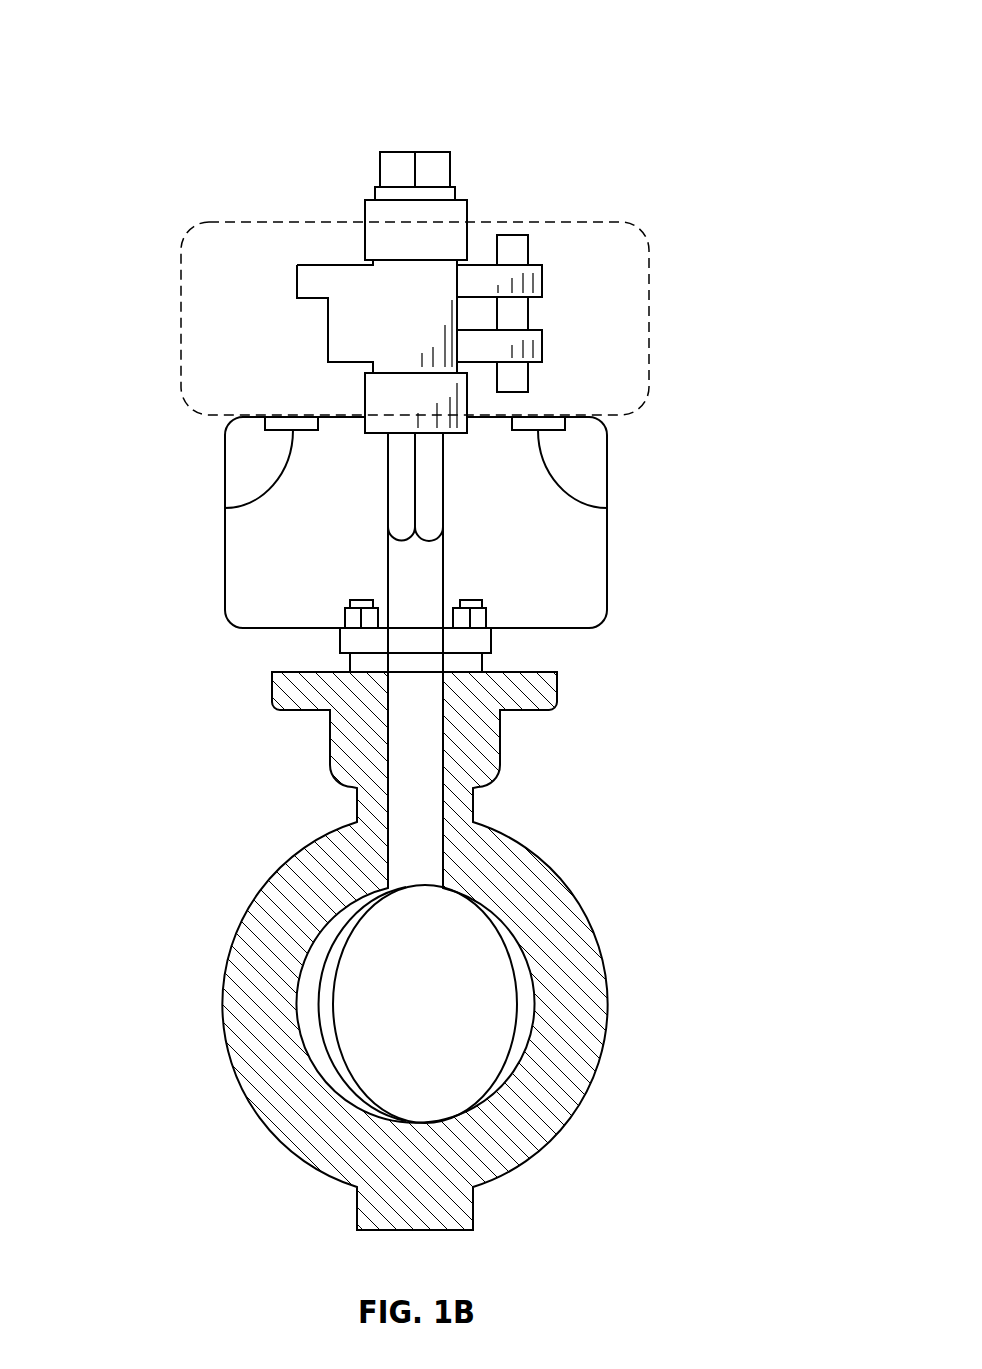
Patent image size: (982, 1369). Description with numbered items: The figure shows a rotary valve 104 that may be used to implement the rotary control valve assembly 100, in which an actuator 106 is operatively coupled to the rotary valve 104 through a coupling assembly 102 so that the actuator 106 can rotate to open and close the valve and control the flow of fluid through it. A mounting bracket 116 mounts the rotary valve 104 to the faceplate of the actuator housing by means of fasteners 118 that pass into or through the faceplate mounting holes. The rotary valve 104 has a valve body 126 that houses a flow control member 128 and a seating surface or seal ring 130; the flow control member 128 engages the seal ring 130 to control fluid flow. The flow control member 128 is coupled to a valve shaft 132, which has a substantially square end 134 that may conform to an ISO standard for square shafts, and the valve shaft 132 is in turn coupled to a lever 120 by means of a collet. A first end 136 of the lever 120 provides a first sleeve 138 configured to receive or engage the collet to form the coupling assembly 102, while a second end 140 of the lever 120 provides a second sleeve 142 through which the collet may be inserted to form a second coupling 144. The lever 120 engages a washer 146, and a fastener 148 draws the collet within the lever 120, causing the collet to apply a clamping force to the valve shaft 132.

The rotary control valve assembly 100 is at (118, 46).
The coupling assembly 102 is at (345, 380).
The rotary valve 104 is at (587, 917).
The actuator 106 is at (658, 318).
The mounting bracket 116 is at (225, 465).
The fasteners 118 is at (232, 507).
The lever 120 is at (325, 264).
The valve body 126 is at (238, 993).
The flow control member 128 is at (440, 1017).
The seal ring 130 is at (350, 1097).
The valve shaft 132 is at (397, 575).
The square end 134 is at (443, 510).
The first end 136 is at (467, 408).
The first sleeve 138 is at (367, 403).
The second end 140 is at (420, 263).
The second sleeve 142 is at (467, 230).
The second coupling 144 is at (478, 195).
The washer 146 is at (375, 191).
The fastener 148 is at (452, 163).